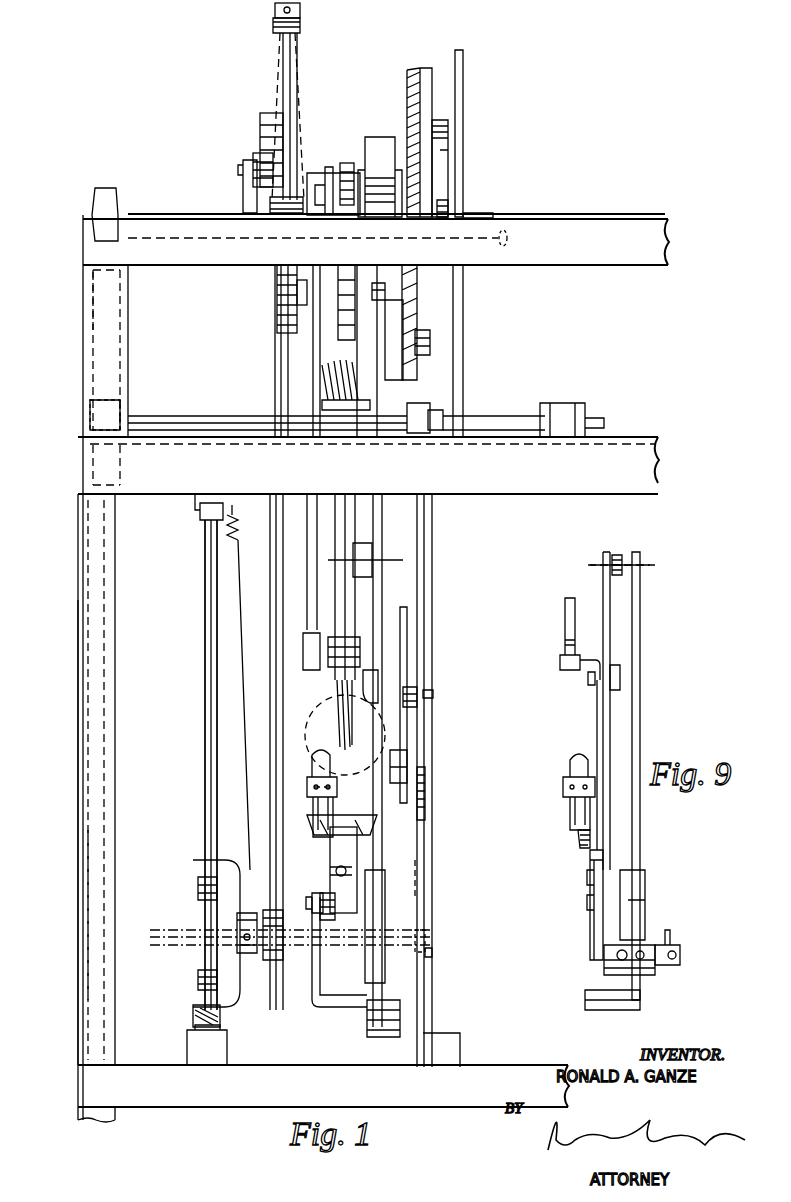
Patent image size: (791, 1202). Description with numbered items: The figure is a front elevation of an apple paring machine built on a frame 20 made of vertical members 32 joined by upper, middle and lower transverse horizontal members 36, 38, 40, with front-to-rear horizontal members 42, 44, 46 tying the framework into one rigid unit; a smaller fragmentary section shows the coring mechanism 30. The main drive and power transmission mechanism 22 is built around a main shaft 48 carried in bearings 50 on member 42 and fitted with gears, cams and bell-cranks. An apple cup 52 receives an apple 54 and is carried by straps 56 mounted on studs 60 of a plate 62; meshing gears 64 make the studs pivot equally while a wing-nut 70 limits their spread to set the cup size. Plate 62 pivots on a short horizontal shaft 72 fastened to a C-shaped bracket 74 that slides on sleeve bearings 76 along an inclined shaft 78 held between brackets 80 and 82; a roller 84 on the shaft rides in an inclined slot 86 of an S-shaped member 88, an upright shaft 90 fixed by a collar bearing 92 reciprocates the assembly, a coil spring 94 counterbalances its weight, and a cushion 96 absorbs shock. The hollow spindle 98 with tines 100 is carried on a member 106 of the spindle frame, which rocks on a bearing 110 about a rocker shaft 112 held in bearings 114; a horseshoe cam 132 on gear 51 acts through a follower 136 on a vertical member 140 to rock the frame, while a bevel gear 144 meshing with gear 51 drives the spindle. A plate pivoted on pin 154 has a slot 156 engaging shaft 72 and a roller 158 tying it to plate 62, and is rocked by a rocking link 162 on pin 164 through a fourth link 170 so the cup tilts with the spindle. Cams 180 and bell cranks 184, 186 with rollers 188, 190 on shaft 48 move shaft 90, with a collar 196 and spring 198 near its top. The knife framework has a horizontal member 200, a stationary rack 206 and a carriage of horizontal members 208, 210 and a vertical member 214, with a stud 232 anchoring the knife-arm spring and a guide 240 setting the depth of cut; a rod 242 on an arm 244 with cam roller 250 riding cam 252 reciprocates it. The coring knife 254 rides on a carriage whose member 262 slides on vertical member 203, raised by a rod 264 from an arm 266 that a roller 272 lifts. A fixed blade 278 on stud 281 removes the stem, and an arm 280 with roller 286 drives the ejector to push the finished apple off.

In FIG. 1, the frame 20 is at (56, 263).
In FIG. 1, the main drive and power transmission mechanism 22 is at (222, 165).
In FIG. 9, the coring mechanism 30 is at (573, 933).
In FIG. 1, the vertical member 32 is at (78, 689).
In FIG. 1, the upper transverse horizontal member 36 is at (668, 244).
In FIG. 1, the middle transverse horizontal member 38 is at (658, 474).
In FIG. 1, the lower transverse horizontal member 40 is at (460, 1078).
In FIG. 1, the front-to-rear horizontal member 42 is at (88, 291).
In FIG. 1, the front-to-rear horizontal member 44 is at (88, 465).
In FIG. 1, the front-to-rear horizontal member 46 is at (85, 839).
In FIG. 1, the main shaft 48 is at (478, 213).
In FIG. 1, the bearing 50 is at (106, 195).
In FIG. 1, the gear 51 is at (425, 68).
In FIG. 1, the apple cup 52 is at (320, 825).
In FIG. 1, the apple 54 is at (315, 715).
In FIG. 1, the strap 56 is at (345, 827).
In FIG. 1, the stud 60 is at (312, 900).
In FIG. 1, the plate 62 is at (312, 995).
In FIG. 1, the gear 64 is at (335, 920).
In FIG. 1, the wing-nut 70 is at (336, 869).
In FIG. 1, the short horizontal shaft 72 is at (355, 945).
In FIG. 1, the C-shaped bracket 74 is at (240, 975).
In FIG. 1, the sleeve bearing 76 is at (198, 888).
In FIG. 1, the inclined shaft 78 is at (205, 935).
In FIG. 1, the bracket 80 is at (195, 513).
In FIG. 1, the bracket 82 is at (190, 1048).
In FIG. 1, the roller 84 is at (425, 935).
In FIG. 1, the inclined slot 86 is at (428, 870).
In FIG. 1, the S-shaped member 88 is at (432, 747).
In FIG. 1, the shaft 90 is at (275, 605).
In FIG. 1, the collar bearing 92 is at (277, 945).
In FIG. 1, the coil spring 94 is at (240, 520).
In FIG. 1, the cushion 96 is at (220, 1017).
In FIG. 1, the hollow spindle 98 is at (335, 540).
In FIG. 1, the tines 100 is at (348, 752).
In FIG. 1, the member 106 is at (382, 590).
In FIG. 1, the bearing 110 is at (420, 403).
In FIG. 1, the rocker shaft 112 is at (475, 416).
In FIG. 1, the bearing 114 is at (560, 410).
In FIG. 1, the cam 132 is at (442, 120).
In FIG. 1, the follower 136 is at (446, 200).
In FIG. 1, the vertically extending member 140 is at (461, 60).
In FIG. 1, the bevel gear 144 is at (322, 375).
In FIG. 1, the pin 154 is at (432, 954).
In FIG. 1, the slot 156 is at (385, 895).
In FIG. 1, the roller 158 is at (370, 1015).
In FIG. 1, the rocking link 162 is at (407, 650).
In FIG. 1, the pin 164 is at (440, 692).
In FIG. 1, the fourth link 170 is at (425, 795).
In FIG. 1, the cam 180 is at (265, 113).
In FIG. 1, the bell crank 184 is at (277, 275).
In FIG. 1, the bell crank 186 is at (243, 193).
In FIG. 1, the roller 188 is at (297, 290).
In FIG. 1, the roller 190 is at (258, 155).
In FIG. 1, the collar 196 is at (300, 12).
In FIG. 1, the spring 198 is at (300, 35).
In FIG. 1, the horizontal member 200 is at (372, 552).
In FIG. 9, the vertical member 203 is at (640, 688).
In FIG. 9, the stationary rack 206 is at (597, 740).
In FIG. 9, the horizontal member 208 is at (615, 668).
In FIG. 9, the horizontal member 210 is at (610, 870).
In FIG. 9, the vertical member 214 is at (603, 717).
In FIG. 9, the stud 232 is at (580, 845).
In FIG. 1, the guide 240 is at (307, 778).
In FIG. 9, the guide 240 is at (563, 793).
In FIG. 1, the rod 242 is at (307, 575).
In FIG. 9, the rod 242 is at (565, 619).
In FIG. 1, the horizontally extending arm 244 is at (328, 167).
In FIG. 1, the cam roller 250 is at (347, 163).
In FIG. 1, the cam 252 is at (285, 320).
In FIG. 9, the coring knife 254 is at (590, 905).
In FIG. 9, the vertical member 262 is at (645, 905).
In FIG. 9, the rod 264 is at (672, 936).
In FIG. 1, the horizontal arm 266 is at (385, 137).
In FIG. 1, the roller 272 is at (385, 292).
In FIG. 1, the fixed blade 278 is at (365, 700).
In FIG. 1, the arm 280 is at (403, 332).
In FIG. 1, the stud 281 is at (417, 708).
In FIG. 1, the roller 286 is at (430, 352).